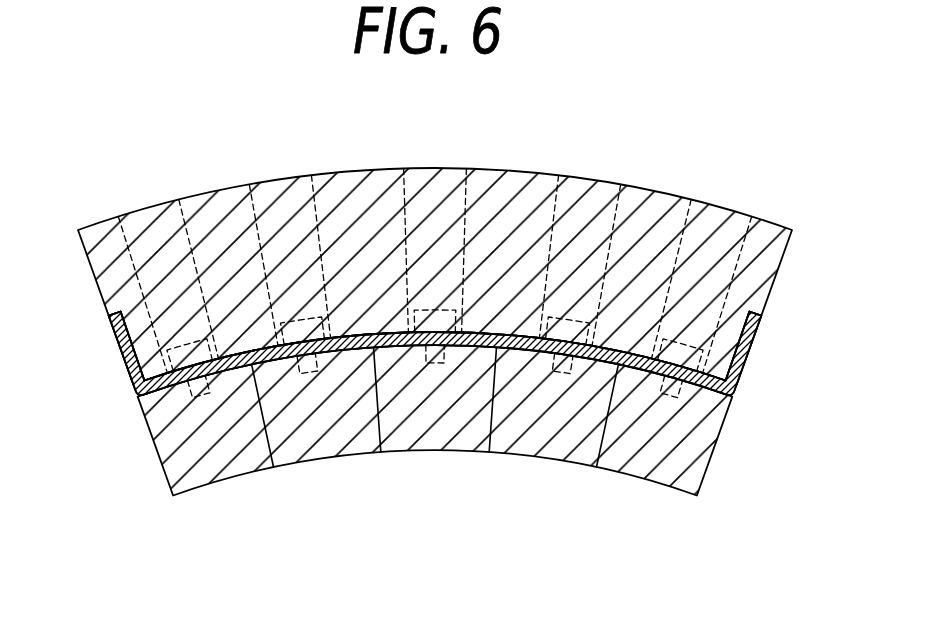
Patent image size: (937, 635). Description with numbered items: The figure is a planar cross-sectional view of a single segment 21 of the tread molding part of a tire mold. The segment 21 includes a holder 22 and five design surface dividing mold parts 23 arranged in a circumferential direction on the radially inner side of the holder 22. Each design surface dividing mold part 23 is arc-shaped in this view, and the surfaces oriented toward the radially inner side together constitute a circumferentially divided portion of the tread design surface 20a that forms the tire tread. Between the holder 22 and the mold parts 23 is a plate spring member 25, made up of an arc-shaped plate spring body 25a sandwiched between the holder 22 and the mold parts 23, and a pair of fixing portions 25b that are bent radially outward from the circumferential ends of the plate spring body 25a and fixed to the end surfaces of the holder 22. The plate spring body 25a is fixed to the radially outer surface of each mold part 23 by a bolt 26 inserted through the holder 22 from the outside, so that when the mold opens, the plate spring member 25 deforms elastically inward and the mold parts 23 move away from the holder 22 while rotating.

The segment 21 is at (755, 148).
The holder 22 is at (212, 191).
The design surface dividing mold part 23 is at (227, 481).
The tread design surface 20a is at (458, 452).
The plate spring member 25 is at (733, 395).
The plate spring body 25a is at (372, 332).
The fixing portion 25b is at (120, 353).
The bolt 26 is at (188, 343).